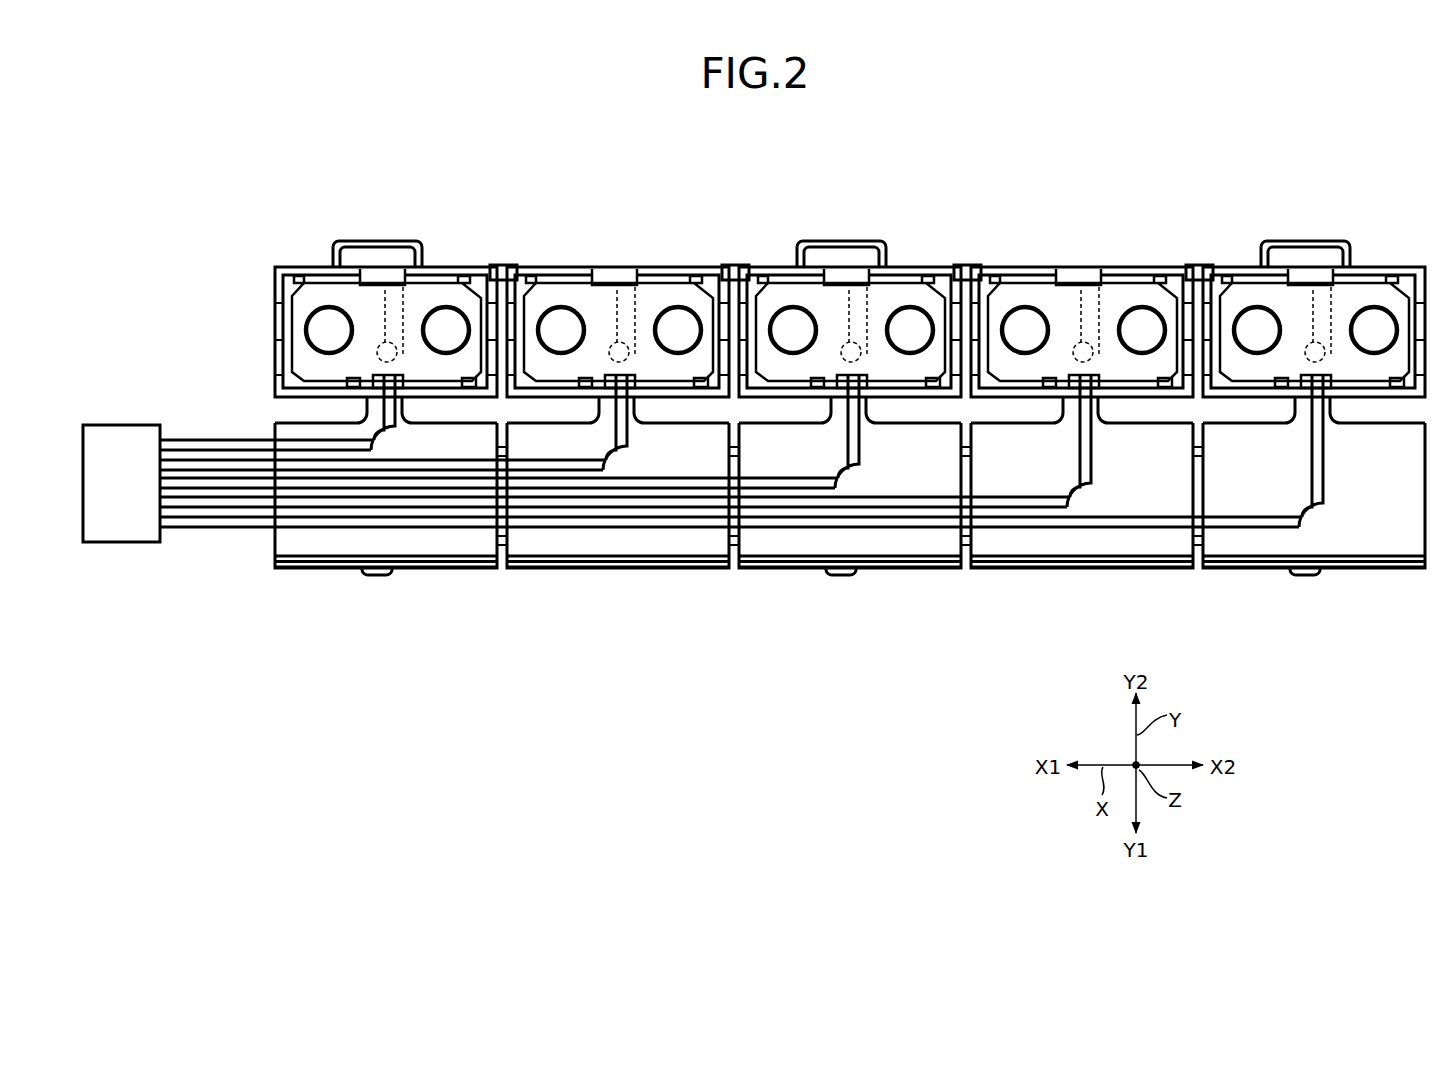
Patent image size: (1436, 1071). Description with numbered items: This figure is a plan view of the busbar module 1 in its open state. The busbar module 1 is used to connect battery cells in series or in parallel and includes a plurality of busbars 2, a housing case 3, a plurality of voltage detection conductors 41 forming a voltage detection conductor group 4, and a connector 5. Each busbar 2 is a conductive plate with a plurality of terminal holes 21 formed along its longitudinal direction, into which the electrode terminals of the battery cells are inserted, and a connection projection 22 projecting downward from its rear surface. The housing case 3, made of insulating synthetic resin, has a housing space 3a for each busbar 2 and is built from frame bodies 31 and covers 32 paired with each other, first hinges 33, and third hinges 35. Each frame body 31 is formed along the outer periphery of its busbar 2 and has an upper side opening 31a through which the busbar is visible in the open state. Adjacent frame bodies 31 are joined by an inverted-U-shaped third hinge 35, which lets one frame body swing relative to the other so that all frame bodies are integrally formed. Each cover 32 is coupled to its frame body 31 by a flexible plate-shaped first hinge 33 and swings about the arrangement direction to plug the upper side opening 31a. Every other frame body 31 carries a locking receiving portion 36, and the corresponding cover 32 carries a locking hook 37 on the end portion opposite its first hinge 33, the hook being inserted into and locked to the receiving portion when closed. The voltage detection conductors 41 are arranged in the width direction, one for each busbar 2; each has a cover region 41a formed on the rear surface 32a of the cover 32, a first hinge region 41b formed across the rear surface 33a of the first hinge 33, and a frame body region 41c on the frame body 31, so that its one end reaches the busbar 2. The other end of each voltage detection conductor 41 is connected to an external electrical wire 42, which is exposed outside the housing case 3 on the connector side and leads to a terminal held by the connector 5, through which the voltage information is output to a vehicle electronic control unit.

The busbar module 1 is at (253, 600).
The busbar 2 is at (458, 298).
The housing case 3 is at (268, 358).
The housing space 3a is at (282, 268).
The voltage detection conductor group 4 is at (652, 545).
The connector 5 is at (108, 422).
The terminal hole 21 is at (329, 307).
The connection projection 22 is at (385, 285).
The frame body 31 is at (273, 285).
The upper side opening 31a is at (290, 325).
The cover 32 is at (352, 545).
The rear surface of the cover 32a is at (460, 542).
The first hinge 33 is at (410, 410).
The rear surface of the first hinge 33a is at (370, 411).
The third hinge 35 is at (502, 265).
The locking receiving portion 36 is at (365, 241).
The locking hook 37 is at (379, 578).
The voltage detection conductor 41 is at (297, 457).
The cover region 41a is at (323, 445).
The first hinge region 41b is at (390, 420).
The frame body region 41c is at (403, 287).
The external electrical wire 42 is at (213, 522).